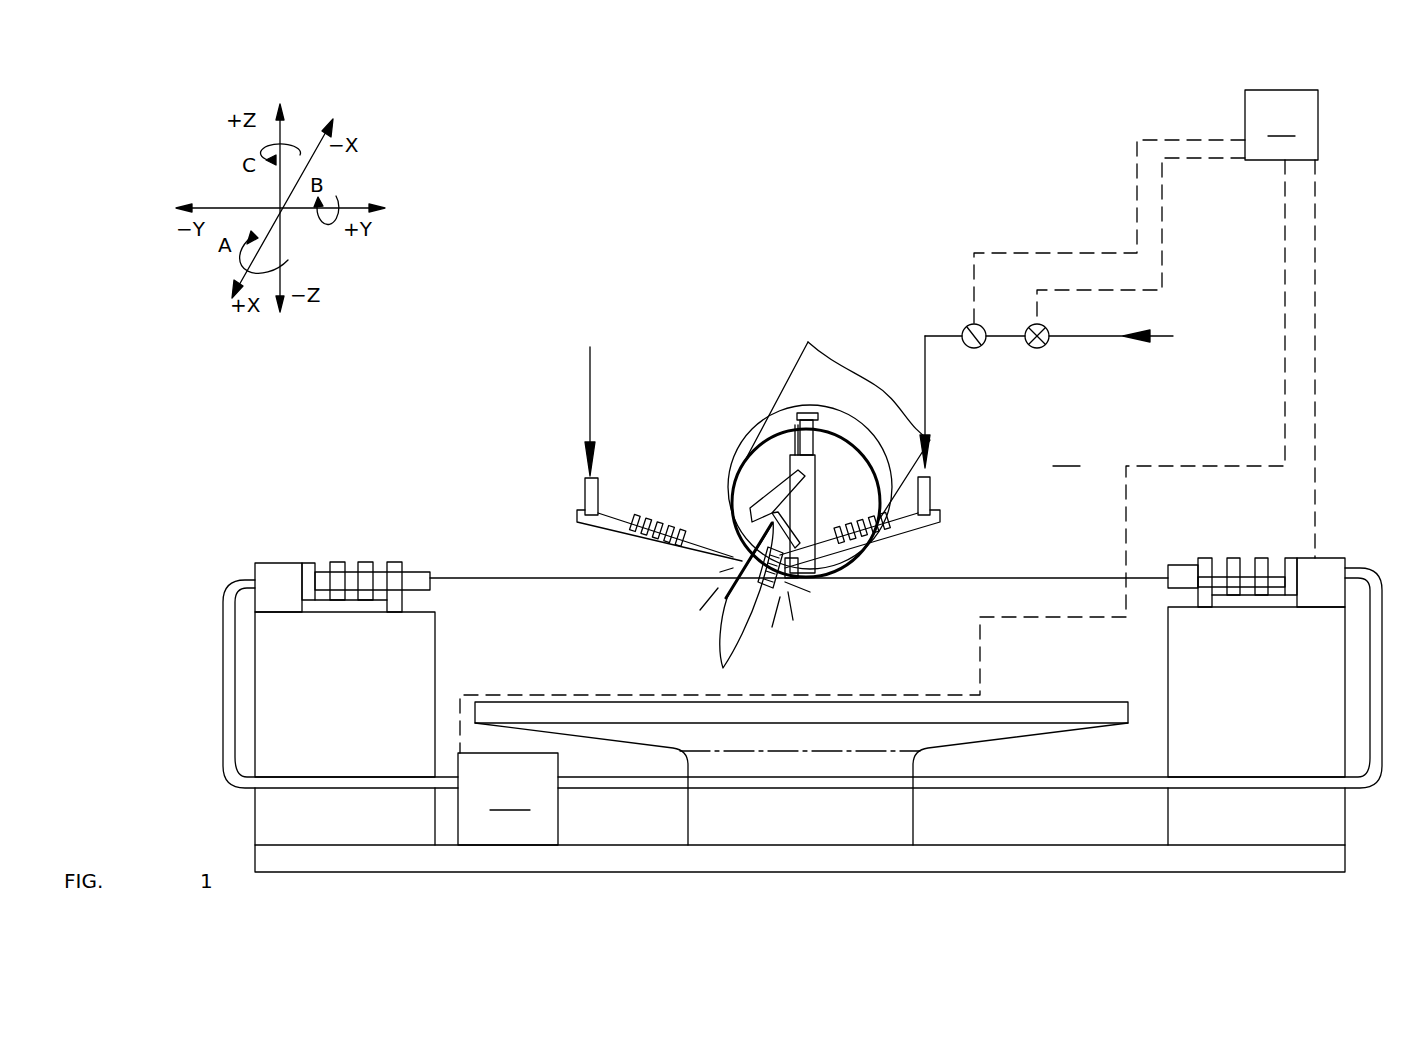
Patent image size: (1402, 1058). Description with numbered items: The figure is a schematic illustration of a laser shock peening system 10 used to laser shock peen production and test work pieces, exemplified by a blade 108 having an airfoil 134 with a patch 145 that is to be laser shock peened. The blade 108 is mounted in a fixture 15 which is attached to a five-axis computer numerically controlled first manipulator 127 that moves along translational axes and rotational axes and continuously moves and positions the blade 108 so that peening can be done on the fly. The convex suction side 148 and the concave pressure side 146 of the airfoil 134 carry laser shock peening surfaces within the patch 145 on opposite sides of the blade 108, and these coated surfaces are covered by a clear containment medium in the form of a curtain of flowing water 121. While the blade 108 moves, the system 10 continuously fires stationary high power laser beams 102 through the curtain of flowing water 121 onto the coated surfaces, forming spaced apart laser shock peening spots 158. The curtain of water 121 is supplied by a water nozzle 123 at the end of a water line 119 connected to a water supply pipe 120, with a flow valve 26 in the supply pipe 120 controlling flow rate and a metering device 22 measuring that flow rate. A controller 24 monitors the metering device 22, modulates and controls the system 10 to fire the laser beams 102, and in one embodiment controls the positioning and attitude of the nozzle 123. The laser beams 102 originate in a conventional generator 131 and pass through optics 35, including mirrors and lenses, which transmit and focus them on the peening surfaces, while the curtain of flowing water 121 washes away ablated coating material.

The laser shock peening system 10 is at (887, 446).
The fixture 15 is at (736, 478).
The metering device 22 is at (978, 348).
The controller 24 is at (1281, 125).
The flow valve 26 is at (1040, 348).
The optics 35 is at (337, 562).
The laser beams 102 is at (487, 578).
The blade 108 is at (737, 620).
The water line 119 is at (612, 530).
The water supply pipe 120 is at (1110, 340).
The curtain of flowing water 121 is at (720, 587).
The water nozzle 123 is at (815, 555).
The first manipulator 127 is at (802, 347).
The generator 131 is at (508, 799).
The airfoil 134 is at (745, 603).
The patch 145 is at (760, 542).
The concave pressure side 146 is at (735, 630).
The convex suction side 148 is at (718, 652).
The laser shock peening spots 158 is at (773, 588).